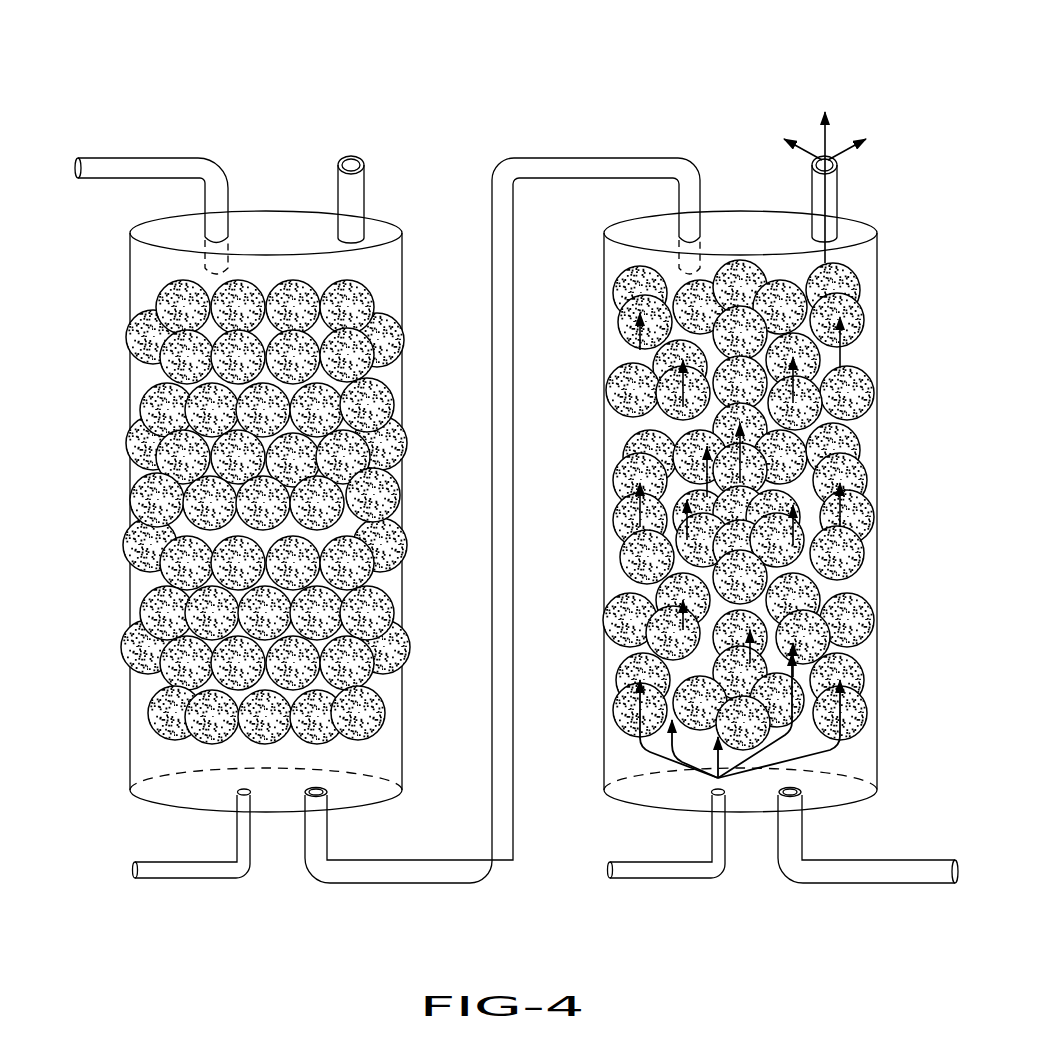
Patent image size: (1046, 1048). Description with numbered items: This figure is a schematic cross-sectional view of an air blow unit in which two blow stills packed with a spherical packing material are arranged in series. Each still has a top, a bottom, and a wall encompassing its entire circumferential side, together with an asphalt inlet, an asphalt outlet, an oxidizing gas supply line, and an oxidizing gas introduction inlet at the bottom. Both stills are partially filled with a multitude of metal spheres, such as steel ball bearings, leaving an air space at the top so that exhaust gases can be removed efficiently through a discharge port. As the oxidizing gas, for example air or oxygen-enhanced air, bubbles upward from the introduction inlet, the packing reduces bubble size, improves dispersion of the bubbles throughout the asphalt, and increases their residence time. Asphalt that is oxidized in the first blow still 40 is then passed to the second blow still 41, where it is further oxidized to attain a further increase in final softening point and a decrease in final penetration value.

The first blow still 40 is at (178, 112).
The second blow still 41 is at (653, 112).